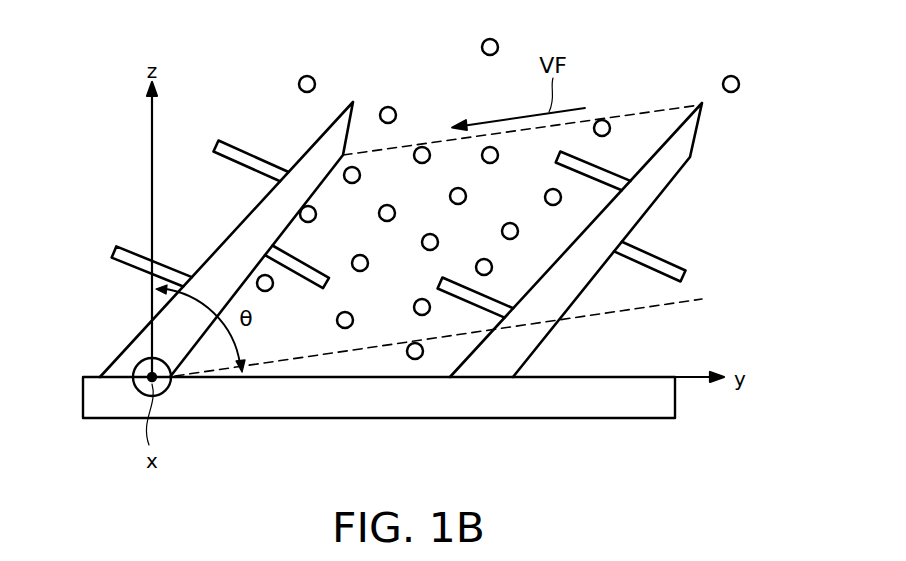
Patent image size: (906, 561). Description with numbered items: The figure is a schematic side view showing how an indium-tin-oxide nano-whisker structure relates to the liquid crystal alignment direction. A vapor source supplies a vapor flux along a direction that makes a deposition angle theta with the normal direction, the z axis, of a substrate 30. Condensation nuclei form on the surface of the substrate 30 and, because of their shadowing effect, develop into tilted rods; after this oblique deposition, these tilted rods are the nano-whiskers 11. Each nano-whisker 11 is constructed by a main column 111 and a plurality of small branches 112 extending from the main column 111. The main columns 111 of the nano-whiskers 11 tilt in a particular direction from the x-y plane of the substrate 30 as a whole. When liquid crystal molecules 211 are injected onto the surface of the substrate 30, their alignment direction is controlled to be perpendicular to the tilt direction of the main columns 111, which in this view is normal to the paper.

The substrate 30 is at (92, 397).
The nano-whisker 11 is at (444, 239).
The main column 111 is at (655, 182).
The small branch 112 is at (684, 271).
The liquid crystal molecule 211 is at (728, 76).